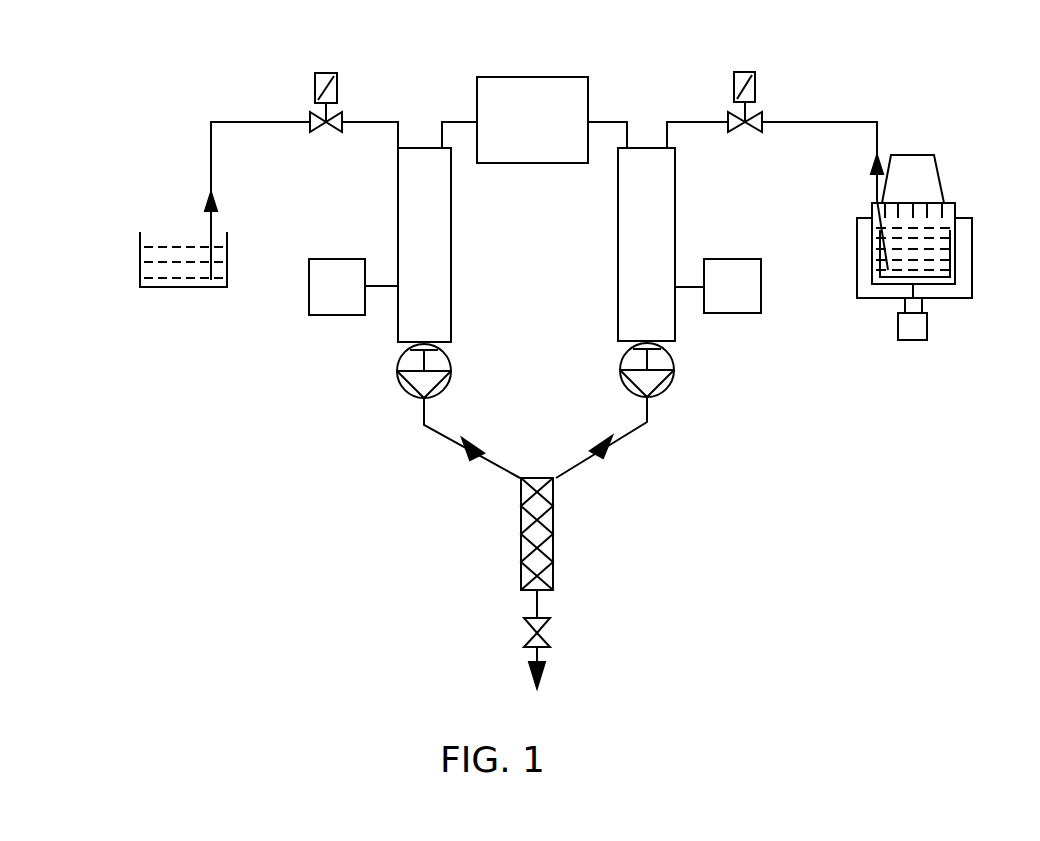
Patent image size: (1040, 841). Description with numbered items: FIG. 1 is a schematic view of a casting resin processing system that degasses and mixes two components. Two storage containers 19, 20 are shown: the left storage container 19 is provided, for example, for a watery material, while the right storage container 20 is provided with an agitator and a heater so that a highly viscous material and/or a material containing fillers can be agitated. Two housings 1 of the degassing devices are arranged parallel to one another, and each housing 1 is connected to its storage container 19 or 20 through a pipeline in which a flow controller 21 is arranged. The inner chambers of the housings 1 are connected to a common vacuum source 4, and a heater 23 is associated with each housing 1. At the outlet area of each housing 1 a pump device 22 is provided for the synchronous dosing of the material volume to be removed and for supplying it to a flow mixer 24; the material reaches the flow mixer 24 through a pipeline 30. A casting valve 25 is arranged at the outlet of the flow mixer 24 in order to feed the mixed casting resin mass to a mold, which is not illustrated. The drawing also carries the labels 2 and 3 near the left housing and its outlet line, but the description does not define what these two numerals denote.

The housing 1 is at (399, 300).
The reaction column 2 is at (398, 148).
The discharge line 3 is at (420, 415).
The vacuum source 4 is at (529, 90).
The storage container 19 is at (166, 283).
The storage container 20 is at (933, 258).
The flow controller 21 is at (310, 117).
The pump device 22 is at (393, 373).
The heater 23 is at (322, 292).
The flow mixer 24 is at (550, 548).
The casting valve 25 is at (546, 636).
The pipeline 30 is at (457, 447).